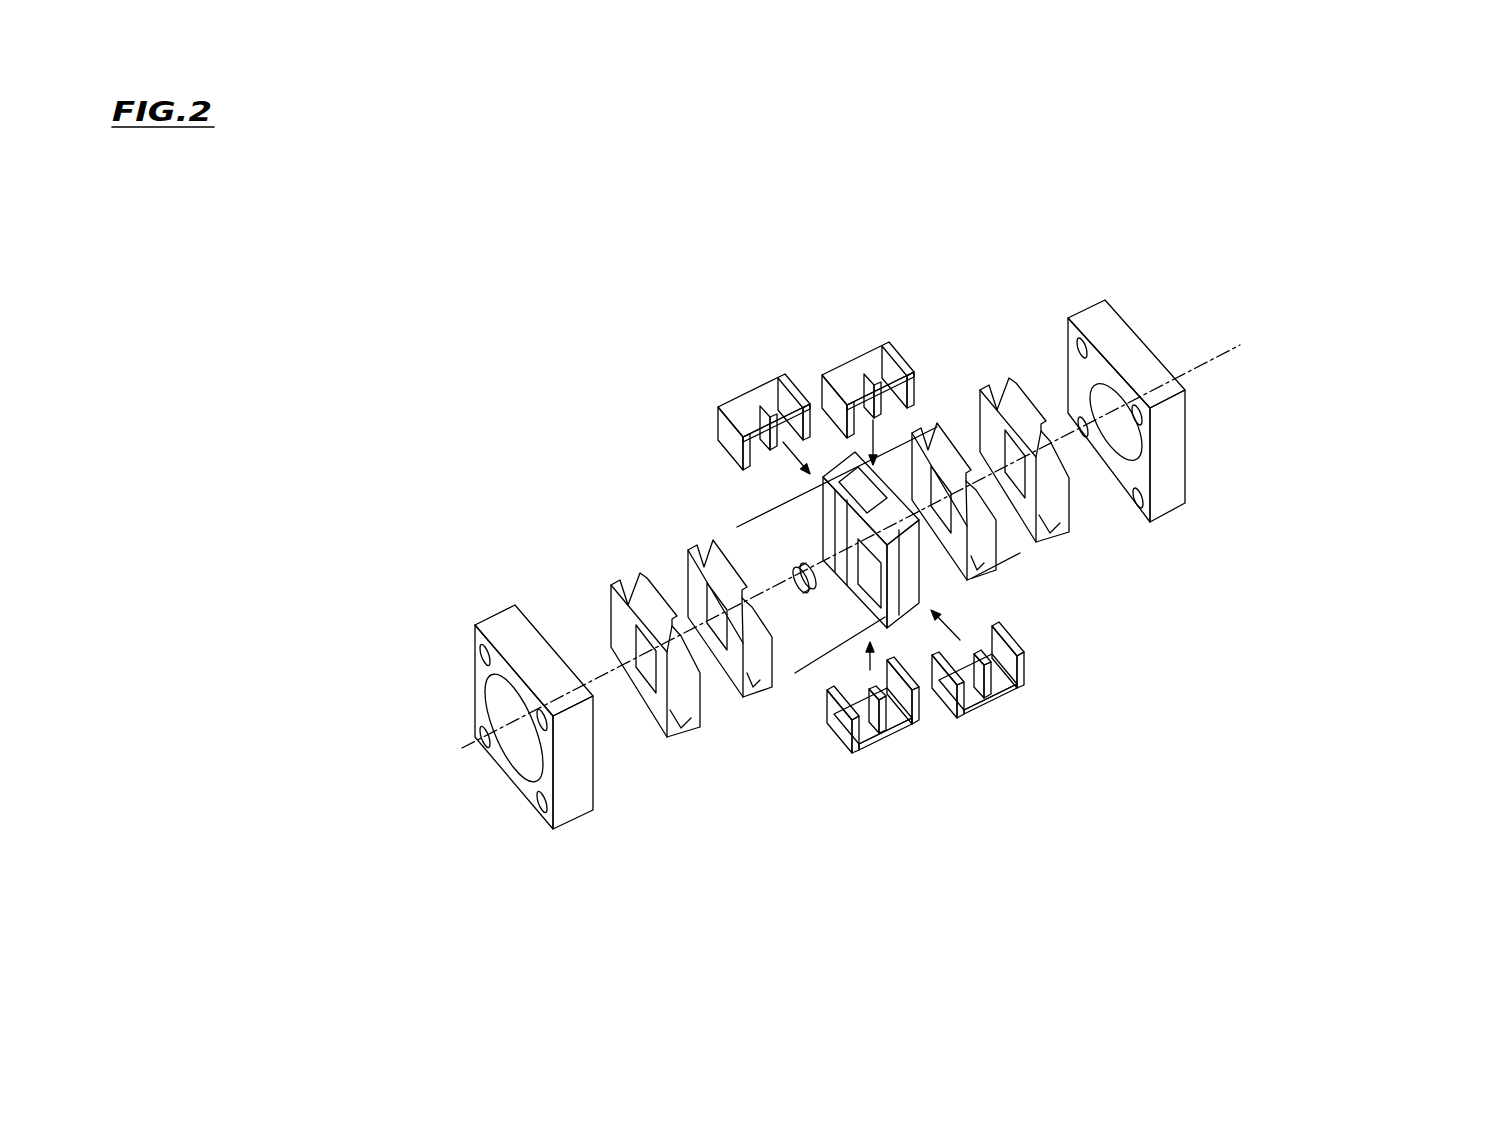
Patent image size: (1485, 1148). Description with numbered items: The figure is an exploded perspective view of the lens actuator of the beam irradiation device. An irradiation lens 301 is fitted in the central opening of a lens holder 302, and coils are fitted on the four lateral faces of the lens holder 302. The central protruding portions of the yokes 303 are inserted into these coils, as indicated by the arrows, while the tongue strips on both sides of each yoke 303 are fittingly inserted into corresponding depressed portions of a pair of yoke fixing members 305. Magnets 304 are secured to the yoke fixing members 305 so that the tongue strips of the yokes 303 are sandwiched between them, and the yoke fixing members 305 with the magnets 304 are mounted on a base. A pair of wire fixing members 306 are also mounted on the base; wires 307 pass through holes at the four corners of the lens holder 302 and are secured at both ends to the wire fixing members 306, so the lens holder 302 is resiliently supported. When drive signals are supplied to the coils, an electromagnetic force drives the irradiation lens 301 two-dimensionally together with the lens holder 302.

The irradiation lens 301 is at (790, 565).
The lens holder 302 is at (820, 525).
The yoke 303 is at (731, 392).
The magnet 304 is at (755, 678).
The yoke fixing member 305 is at (617, 578).
The wire fixing member 306 is at (477, 625).
The wire 307 is at (800, 668).